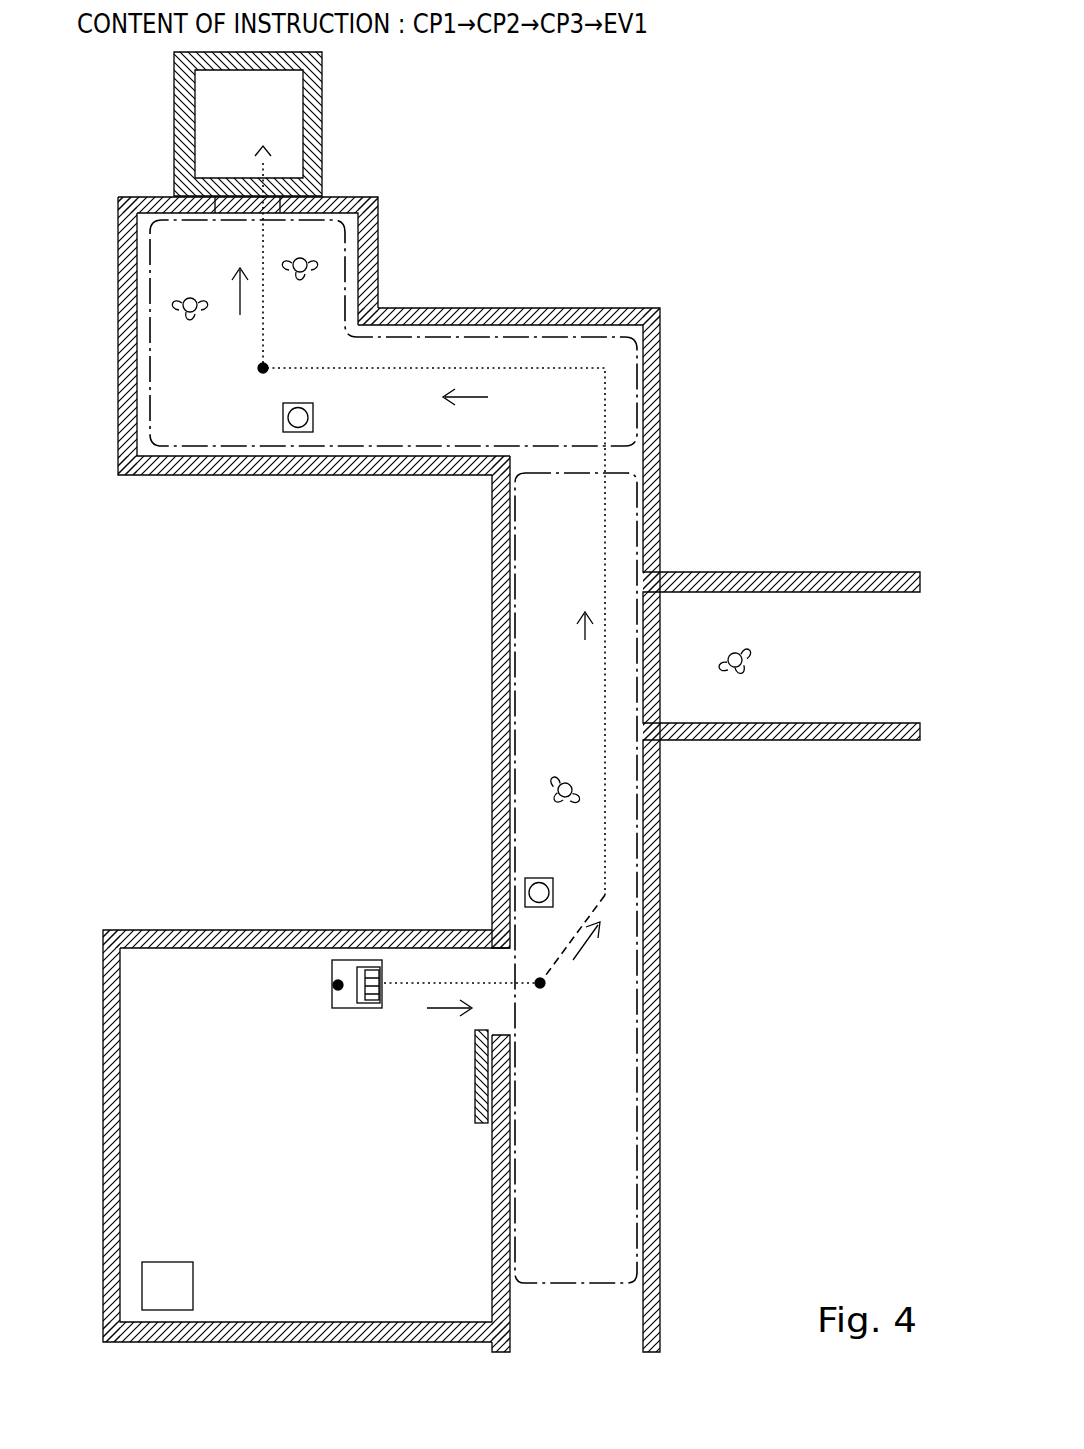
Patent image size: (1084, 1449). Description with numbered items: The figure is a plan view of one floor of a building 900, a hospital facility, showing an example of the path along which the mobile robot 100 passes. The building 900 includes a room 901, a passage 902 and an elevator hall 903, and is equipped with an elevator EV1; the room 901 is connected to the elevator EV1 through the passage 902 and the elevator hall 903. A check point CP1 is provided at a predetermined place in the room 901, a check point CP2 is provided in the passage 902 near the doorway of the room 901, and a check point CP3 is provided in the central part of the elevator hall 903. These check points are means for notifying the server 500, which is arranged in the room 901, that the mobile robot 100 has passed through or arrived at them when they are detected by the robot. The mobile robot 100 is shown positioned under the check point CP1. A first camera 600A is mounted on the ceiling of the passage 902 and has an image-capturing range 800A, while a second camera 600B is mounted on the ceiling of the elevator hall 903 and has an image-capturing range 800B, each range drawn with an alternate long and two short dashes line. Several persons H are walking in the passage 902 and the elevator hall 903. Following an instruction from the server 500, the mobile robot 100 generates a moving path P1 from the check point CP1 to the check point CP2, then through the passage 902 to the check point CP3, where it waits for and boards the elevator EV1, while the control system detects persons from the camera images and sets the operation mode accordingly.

The elevator EV1 is at (293, 113).
The building 900 is at (615, 190).
The elevator hall 903 is at (348, 262).
The passage 902 is at (540, 660).
The room 901 is at (210, 960).
The image-capturing range 800B is at (340, 447).
The image-capturing range 800A is at (645, 808).
The moving path P1 is at (607, 395).
The check point CP3 is at (263, 373).
The check point CP2 is at (545, 983).
The check point CP1 is at (334, 985).
The mobile robot 100 is at (350, 960).
The server 500 is at (175, 1262).
The second camera 600B is at (291, 434).
The first camera 600A is at (525, 893).
The person H is at (750, 657).